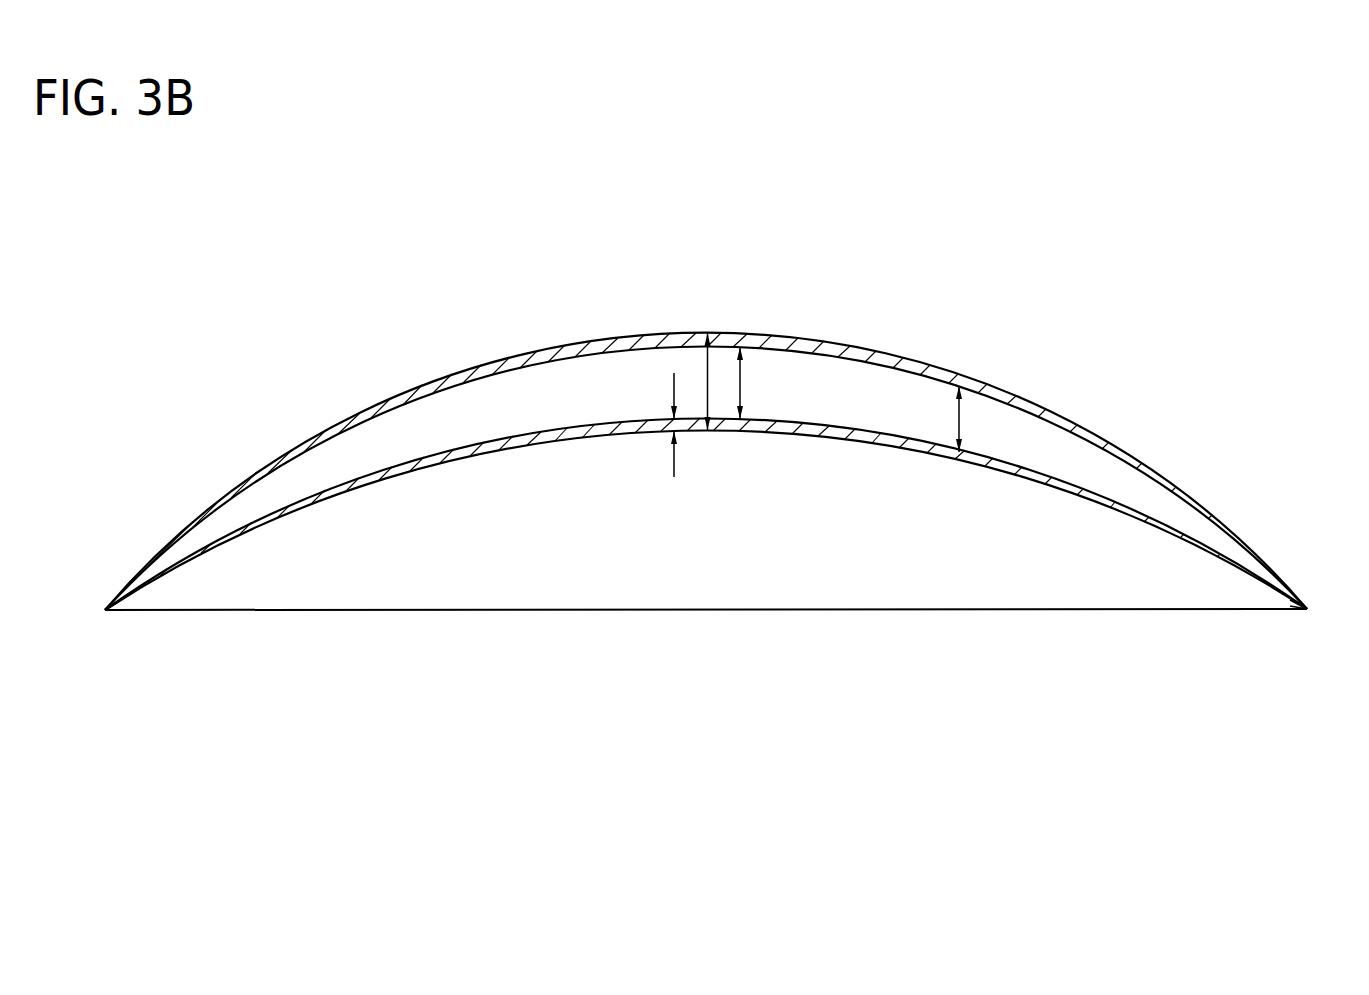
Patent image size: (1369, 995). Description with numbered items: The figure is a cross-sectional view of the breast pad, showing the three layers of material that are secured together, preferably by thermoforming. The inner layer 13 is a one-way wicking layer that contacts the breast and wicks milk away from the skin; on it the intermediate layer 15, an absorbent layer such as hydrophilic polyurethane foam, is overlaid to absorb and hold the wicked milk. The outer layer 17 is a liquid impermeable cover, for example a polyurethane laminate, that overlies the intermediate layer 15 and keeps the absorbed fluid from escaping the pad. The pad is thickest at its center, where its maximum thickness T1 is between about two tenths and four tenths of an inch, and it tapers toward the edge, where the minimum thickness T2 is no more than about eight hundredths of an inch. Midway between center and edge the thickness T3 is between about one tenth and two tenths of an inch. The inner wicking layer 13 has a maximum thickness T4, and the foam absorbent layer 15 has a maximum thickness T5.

The outer layer 17 is at (430, 382).
The inner layer 13 is at (1033, 480).
The intermediate layer 15 is at (842, 387).
The maximum thickness T1 is at (707, 375).
The minimum thickness T2 is at (1303, 604).
The thickness T3 is at (960, 417).
The maximum thickness T4 is at (673, 466).
The maximum thickness T5 is at (742, 375).